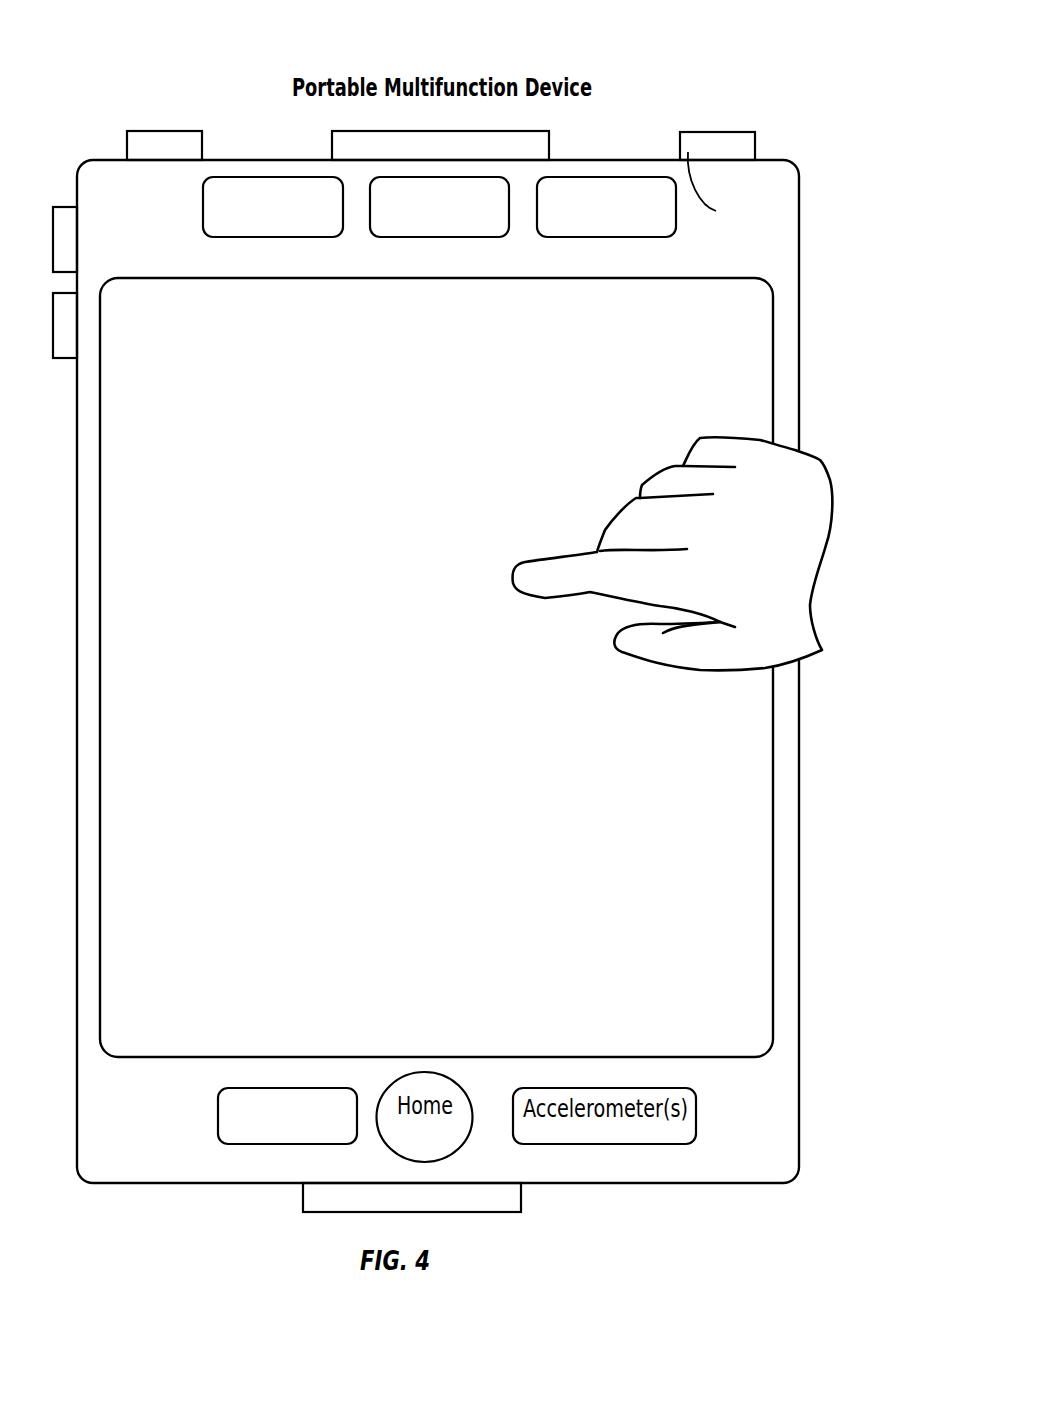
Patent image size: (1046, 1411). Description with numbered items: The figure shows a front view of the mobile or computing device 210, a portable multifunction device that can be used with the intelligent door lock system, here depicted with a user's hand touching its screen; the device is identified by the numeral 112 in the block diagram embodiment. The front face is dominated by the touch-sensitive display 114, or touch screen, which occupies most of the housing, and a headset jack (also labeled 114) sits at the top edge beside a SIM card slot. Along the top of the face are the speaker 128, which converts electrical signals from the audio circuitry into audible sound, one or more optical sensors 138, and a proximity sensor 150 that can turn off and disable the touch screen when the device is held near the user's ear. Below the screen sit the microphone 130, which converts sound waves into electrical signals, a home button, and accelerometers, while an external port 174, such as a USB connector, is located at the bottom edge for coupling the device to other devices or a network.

The block diagram 112 is at (655, 53).
The touch-sensitive display 114 is at (717, 131).
The speaker 128 is at (275, 238).
The microphone 130 is at (218, 1114).
The optical sensor 138 is at (441, 238).
The proximity sensor 150 is at (607, 238).
The external port 174 is at (316, 1214).
The mobile or computing device 210 is at (598, 160).